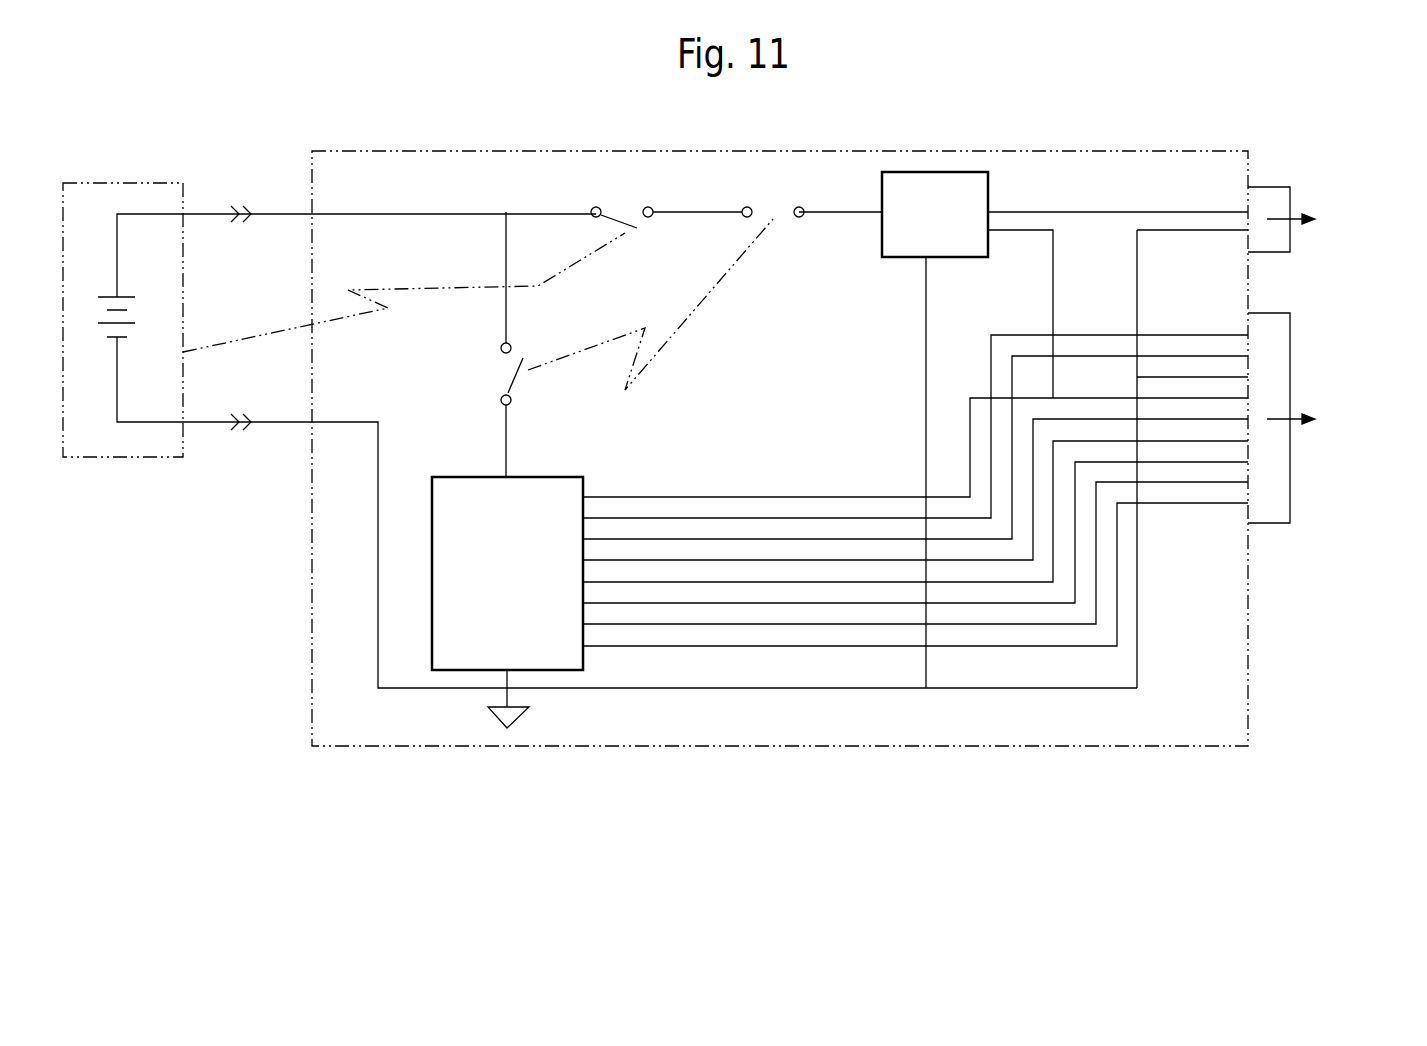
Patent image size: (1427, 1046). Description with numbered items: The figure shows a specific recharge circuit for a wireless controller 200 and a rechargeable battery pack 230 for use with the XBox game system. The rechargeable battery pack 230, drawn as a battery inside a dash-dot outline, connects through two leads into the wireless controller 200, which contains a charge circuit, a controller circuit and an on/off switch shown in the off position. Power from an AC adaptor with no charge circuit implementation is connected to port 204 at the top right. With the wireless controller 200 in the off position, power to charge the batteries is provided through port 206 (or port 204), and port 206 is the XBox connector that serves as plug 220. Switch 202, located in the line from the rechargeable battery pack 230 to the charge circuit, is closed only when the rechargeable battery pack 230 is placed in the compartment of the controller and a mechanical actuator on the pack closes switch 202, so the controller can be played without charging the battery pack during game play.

The wireless controller 200 is at (1230, 647).
The switch 202 is at (627, 223).
The port 204 is at (1263, 197).
The port 206 is at (1277, 342).
The plug 220 is at (1340, 431).
The rechargeable battery pack 230 is at (148, 197).